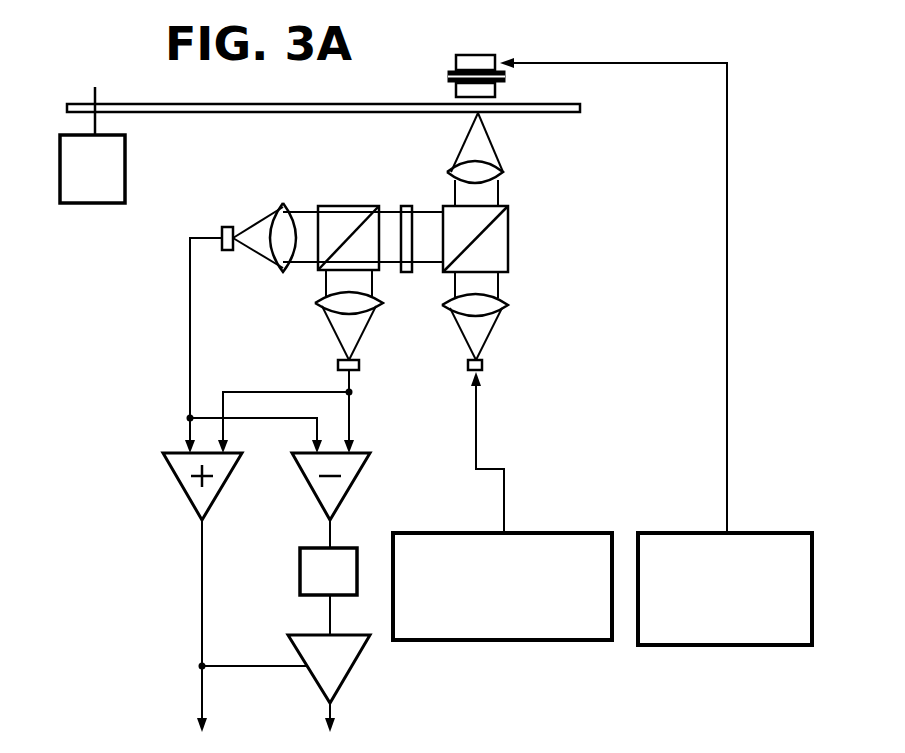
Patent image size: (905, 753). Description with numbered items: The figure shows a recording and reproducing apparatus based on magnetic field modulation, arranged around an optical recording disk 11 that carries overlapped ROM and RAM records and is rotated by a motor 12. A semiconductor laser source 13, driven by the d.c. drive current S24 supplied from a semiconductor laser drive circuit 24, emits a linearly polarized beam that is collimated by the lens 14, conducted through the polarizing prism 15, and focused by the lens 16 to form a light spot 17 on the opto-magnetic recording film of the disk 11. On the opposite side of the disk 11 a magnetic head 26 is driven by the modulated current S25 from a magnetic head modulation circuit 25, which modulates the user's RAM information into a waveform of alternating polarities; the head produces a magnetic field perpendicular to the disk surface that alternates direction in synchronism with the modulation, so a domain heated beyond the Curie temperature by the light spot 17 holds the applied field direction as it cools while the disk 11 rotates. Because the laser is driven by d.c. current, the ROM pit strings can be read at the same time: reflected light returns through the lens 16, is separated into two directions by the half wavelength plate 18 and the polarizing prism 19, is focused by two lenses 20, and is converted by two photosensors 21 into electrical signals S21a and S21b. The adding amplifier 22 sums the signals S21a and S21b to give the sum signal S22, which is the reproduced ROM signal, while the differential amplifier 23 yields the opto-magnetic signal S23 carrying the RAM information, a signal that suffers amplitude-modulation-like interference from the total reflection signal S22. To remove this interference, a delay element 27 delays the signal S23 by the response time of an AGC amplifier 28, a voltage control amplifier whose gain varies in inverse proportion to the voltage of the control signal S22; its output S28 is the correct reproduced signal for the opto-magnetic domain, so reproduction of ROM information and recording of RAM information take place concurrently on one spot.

The optical recording disk 11 is at (583, 113).
The motor 12 is at (125, 168).
The semiconductor laser source 13 is at (482, 365).
The lens 14 is at (508, 305).
The polarizing prism 15 is at (508, 234).
The lens 16 is at (503, 172).
The light spot 17 is at (482, 118).
The half wavelength plate 18 is at (406, 272).
The polarizing prism 19 is at (338, 206).
The lens 20 is at (276, 212).
The photosensor 21 is at (228, 250).
The adding amplifier 22 is at (226, 478).
The differential amplifier 23 is at (352, 488).
The semiconductor laser drive circuit 24 is at (556, 533).
The magnetic head modulation circuit 25 is at (765, 533).
The magnetic head 26 is at (485, 55).
The delay element 27 is at (305, 595).
The AGC amplifier 28 is at (352, 672).
The electrical signal S21a is at (190, 352).
The electrical signal S21b is at (349, 430).
The sum signal S22 is at (202, 555).
The opto-magnetic signal S23 is at (330, 540).
The drive current S24 is at (476, 438).
The modulated current S25 is at (727, 405).
The reproduced signal S28 is at (333, 711).